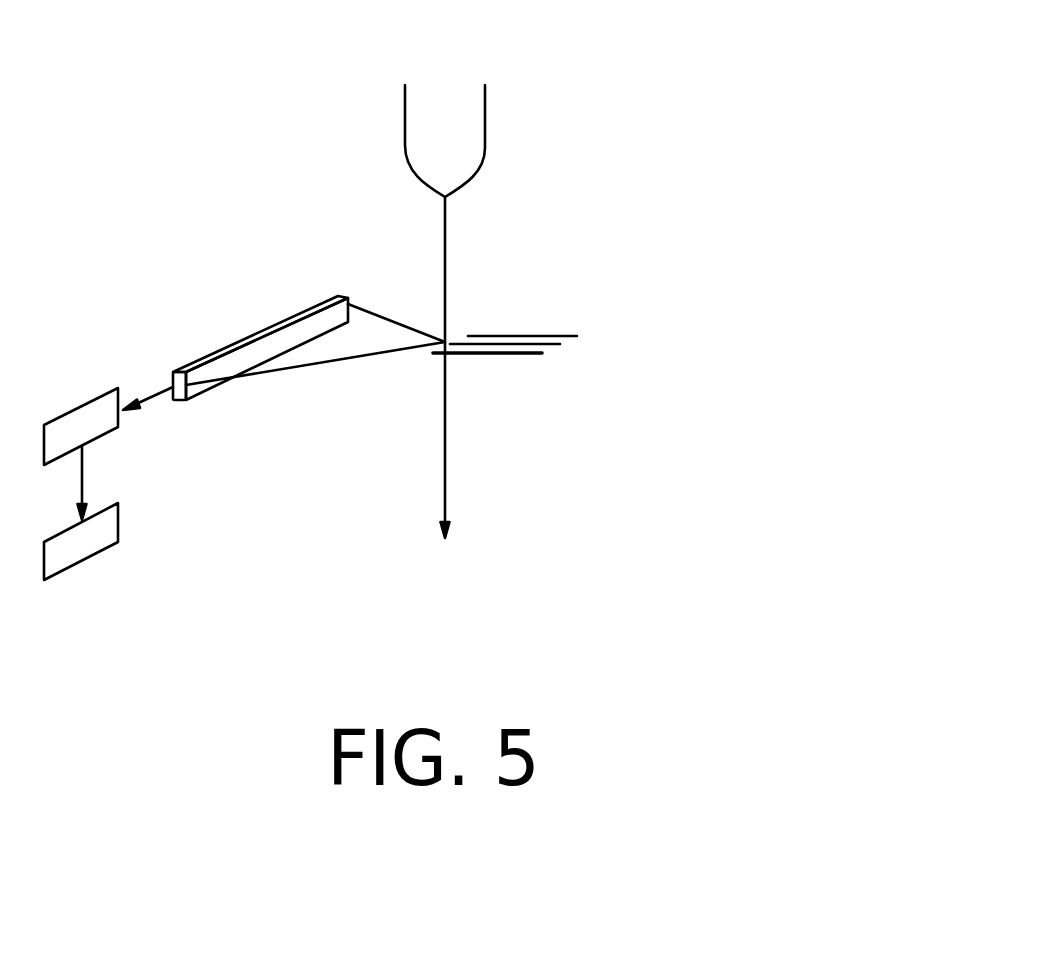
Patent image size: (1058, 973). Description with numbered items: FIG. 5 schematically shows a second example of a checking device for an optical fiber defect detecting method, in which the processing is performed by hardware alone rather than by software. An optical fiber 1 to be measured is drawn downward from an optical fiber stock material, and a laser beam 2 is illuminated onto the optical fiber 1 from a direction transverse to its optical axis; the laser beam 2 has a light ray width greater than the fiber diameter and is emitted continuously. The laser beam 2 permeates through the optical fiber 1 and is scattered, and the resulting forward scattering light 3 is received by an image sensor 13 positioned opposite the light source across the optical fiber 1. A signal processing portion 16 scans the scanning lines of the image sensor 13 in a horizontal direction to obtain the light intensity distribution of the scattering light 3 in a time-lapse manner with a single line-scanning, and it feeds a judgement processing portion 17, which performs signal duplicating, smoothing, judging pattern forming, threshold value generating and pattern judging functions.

The optical fiber to be measured 1 is at (447, 263).
The laser beam 2 is at (516, 366).
The scattering light 3 is at (362, 347).
The image sensor 13 is at (268, 327).
The signal processing portion 16 is at (92, 420).
The judgement processing portion 17 is at (118, 520).